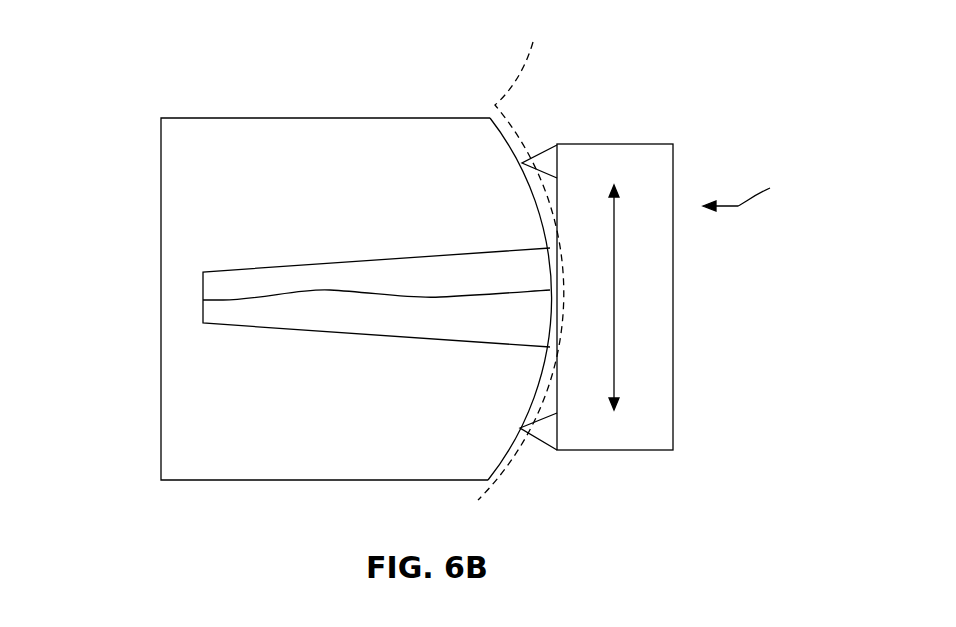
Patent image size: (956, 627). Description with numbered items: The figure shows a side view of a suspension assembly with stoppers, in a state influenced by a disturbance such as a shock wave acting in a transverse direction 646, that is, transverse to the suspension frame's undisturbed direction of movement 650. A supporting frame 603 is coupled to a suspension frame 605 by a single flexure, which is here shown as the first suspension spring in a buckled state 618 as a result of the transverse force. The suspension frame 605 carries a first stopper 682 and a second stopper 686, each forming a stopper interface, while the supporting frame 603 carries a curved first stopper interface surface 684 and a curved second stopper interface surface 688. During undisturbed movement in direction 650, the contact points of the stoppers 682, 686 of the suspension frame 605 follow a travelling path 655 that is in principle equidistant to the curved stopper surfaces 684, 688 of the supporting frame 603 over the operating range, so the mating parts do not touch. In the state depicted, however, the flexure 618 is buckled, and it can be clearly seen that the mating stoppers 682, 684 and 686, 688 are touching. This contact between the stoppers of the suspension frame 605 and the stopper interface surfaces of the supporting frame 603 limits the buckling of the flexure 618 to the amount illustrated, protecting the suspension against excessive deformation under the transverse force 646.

The supporting frame 603 is at (312, 130).
The first suspension spring in a buckled state 618 is at (223, 300).
The travelling path of the stopper interfaces of the suspension frame 655 is at (521, 257).
The suspension frame 605 is at (665, 153).
The first stopper and stopper interface of the suspension frame 682 is at (542, 164).
The second stopper and stopper interface of the suspension frame 686 is at (540, 433).
The first stopper interface surface of the supporting frame 684 is at (522, 163).
The second stopper interface surface of the supporting frame 688 is at (522, 428).
The direction of suspension frame movement 650 is at (615, 302).
The direction of force on the suspension frame 646 is at (759, 193).